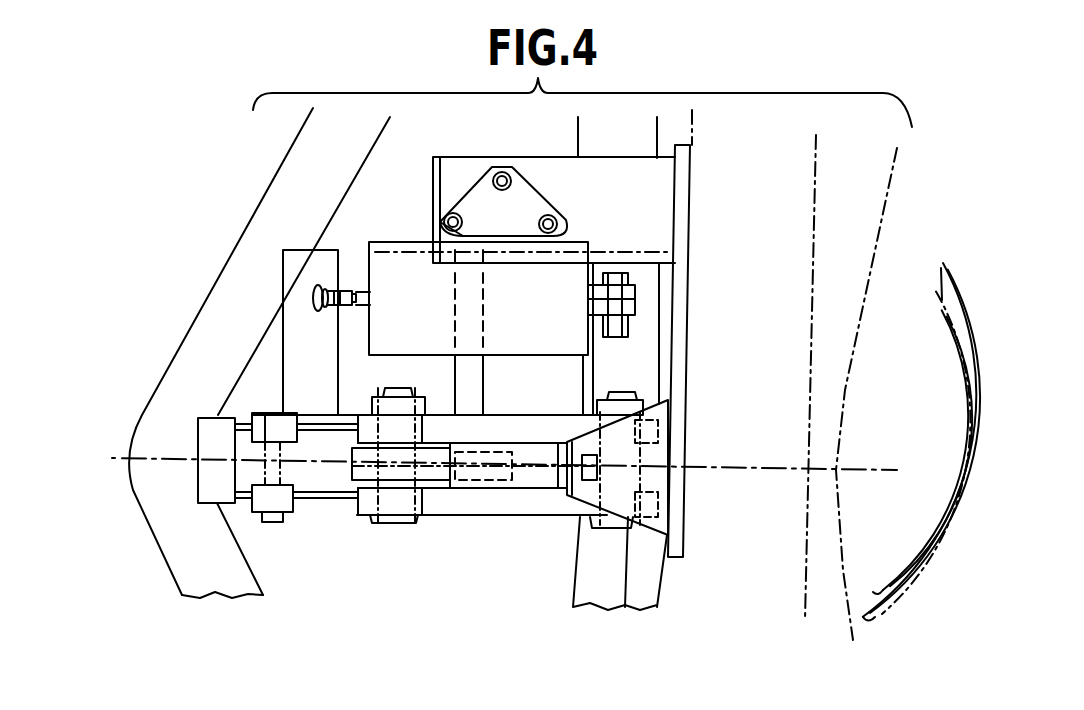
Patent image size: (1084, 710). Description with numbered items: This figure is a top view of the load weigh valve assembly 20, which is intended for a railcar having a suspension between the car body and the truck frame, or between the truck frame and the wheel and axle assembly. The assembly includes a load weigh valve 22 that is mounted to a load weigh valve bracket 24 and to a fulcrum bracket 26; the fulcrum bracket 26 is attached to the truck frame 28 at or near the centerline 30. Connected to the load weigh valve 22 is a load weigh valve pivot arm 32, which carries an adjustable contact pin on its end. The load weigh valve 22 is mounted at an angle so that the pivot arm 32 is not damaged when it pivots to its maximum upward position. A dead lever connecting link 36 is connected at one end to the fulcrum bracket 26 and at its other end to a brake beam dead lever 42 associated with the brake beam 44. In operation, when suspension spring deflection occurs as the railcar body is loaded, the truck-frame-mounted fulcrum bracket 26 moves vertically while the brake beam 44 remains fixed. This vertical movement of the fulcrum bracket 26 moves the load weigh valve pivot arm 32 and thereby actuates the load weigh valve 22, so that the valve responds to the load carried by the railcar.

The load weigh valve assembly 20 is at (236, 175).
The load weigh valve 22 is at (470, 180).
The load weigh valve bracket 24 is at (540, 144).
The fulcrum bracket 26 is at (653, 483).
The truck frame 28 is at (770, 269).
The centerline 30 is at (159, 451).
The load weigh valve pivot arm 32 is at (305, 308).
The dead lever connecting link 36 is at (498, 520).
The brake beam dead lever 42 is at (348, 474).
The brake beam 44 is at (664, 120).